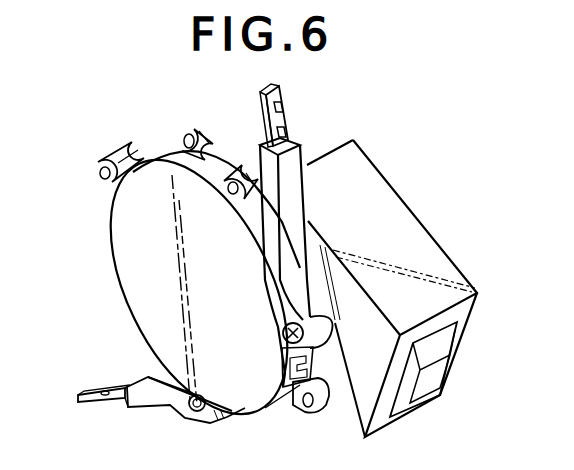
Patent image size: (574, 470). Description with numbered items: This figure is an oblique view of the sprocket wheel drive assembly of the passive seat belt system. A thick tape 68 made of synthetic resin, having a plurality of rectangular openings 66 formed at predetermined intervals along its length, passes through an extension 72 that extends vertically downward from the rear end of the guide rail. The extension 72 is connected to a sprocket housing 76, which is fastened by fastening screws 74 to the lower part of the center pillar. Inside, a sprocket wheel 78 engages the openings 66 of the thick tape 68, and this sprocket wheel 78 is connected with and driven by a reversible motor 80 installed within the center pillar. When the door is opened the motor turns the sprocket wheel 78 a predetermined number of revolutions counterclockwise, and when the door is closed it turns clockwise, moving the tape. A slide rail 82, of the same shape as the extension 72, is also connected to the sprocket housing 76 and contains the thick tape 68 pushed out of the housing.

The rectangular openings 66 is at (284, 103).
The thick tape 68 is at (266, 123).
The extension 72 is at (291, 205).
The fastening screws 74 is at (286, 336).
The sprocket housing 76 is at (115, 233).
The sprocket wheel 78 is at (134, 315).
The reversible motor 80 is at (402, 210).
The slide rail 82 is at (158, 398).